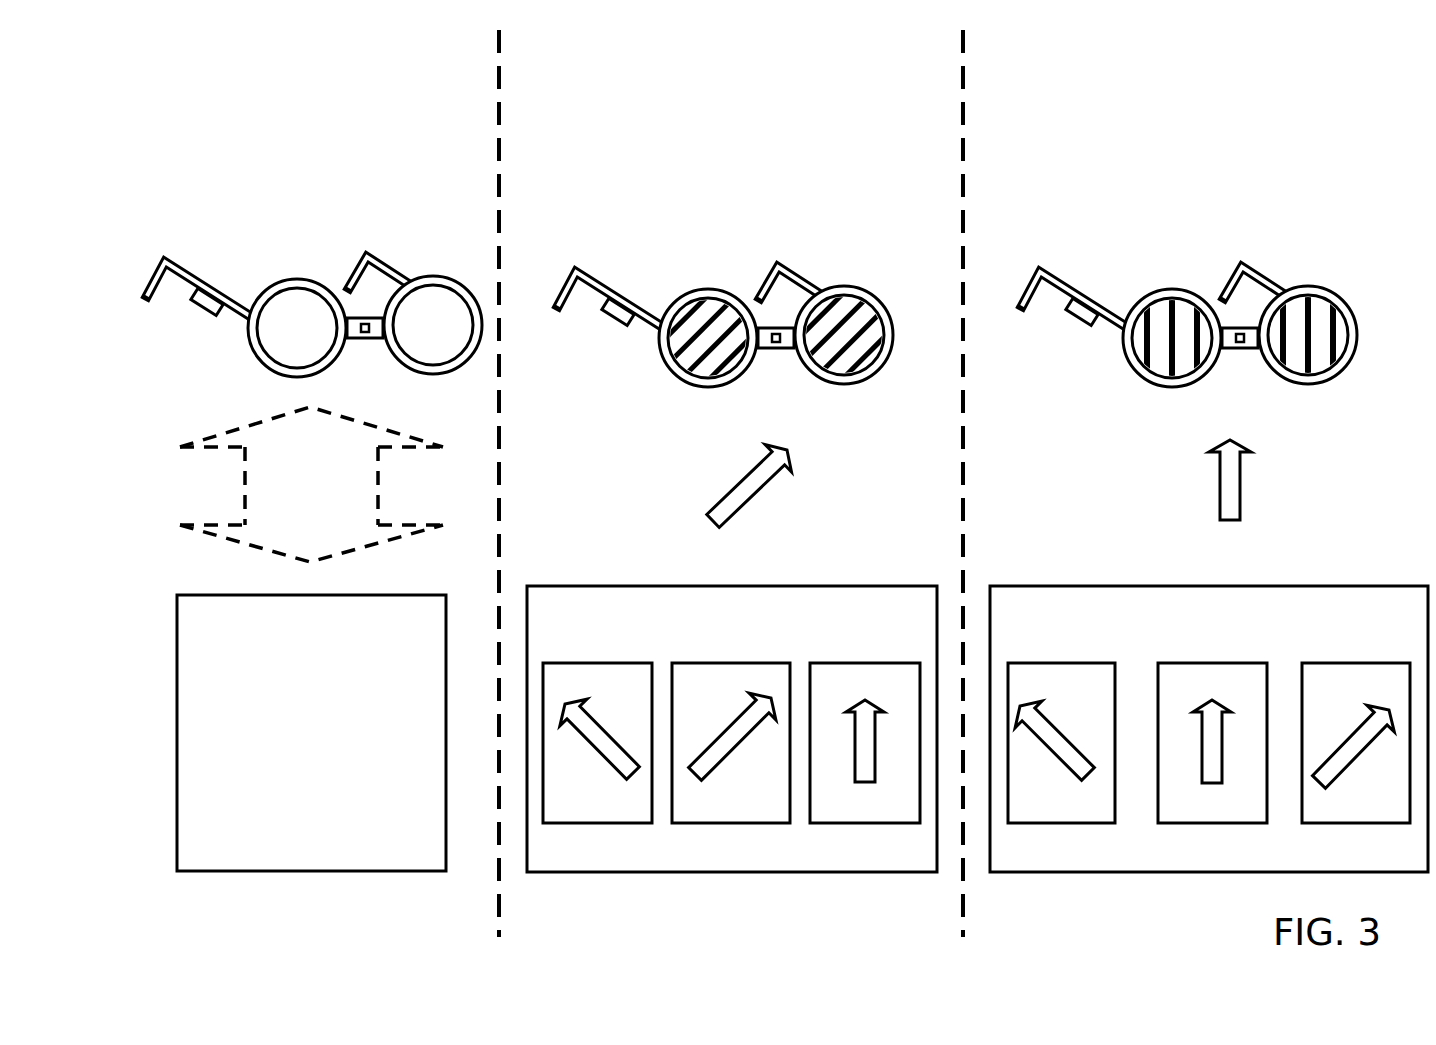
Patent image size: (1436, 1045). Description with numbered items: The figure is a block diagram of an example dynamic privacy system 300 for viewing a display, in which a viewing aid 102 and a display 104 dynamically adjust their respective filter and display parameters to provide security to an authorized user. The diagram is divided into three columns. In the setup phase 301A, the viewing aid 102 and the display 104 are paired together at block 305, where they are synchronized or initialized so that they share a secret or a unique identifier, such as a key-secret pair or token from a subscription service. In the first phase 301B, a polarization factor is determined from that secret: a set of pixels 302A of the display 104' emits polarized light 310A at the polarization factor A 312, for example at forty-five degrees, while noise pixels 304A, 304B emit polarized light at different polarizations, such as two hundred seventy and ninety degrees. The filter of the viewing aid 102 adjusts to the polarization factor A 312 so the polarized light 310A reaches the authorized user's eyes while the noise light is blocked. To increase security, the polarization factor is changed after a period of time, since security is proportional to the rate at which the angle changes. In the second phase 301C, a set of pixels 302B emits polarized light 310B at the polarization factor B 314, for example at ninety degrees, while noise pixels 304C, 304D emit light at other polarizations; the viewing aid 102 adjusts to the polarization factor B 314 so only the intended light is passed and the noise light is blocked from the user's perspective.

The dynamic privacy system 300 is at (191, 61).
The setup phase 301A is at (292, 143).
The phase_1 301B is at (752, 151).
The phase_2 301C is at (1212, 151).
The viewing aid 102 is at (755, 307).
The block 305 is at (299, 484).
The display 104 is at (311, 752).
The display 104' is at (732, 747).
The polarization factor_A 312 is at (750, 311).
The polarization factor_B 314 is at (1200, 301).
The polarized light 310A is at (785, 493).
The polarized light 310B is at (1284, 480).
The noise pixels 304A is at (616, 726).
The set of pixels 302A is at (765, 726).
The noise pixels 304B is at (855, 759).
The noise pixels 304C is at (1076, 721).
The set of pixels 302B is at (1241, 721).
The noise pixels 304D is at (1345, 759).